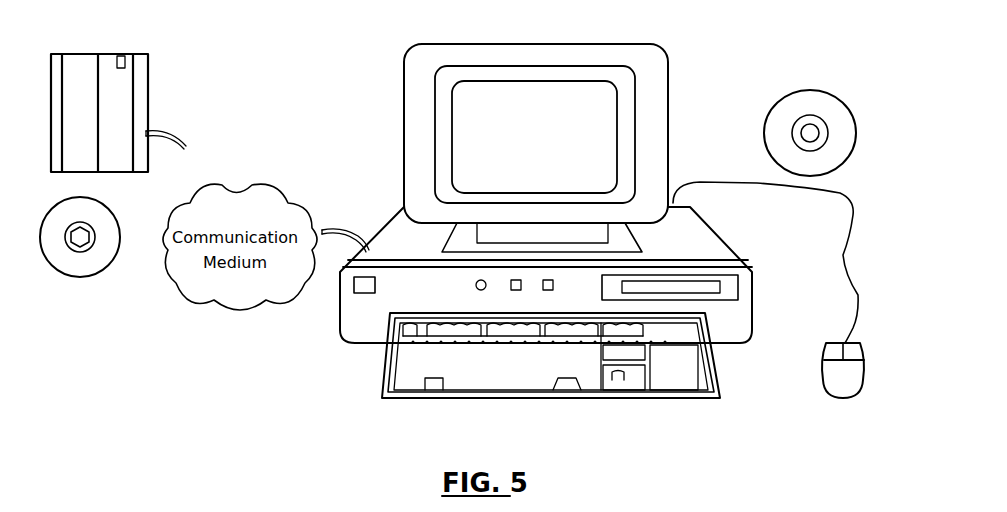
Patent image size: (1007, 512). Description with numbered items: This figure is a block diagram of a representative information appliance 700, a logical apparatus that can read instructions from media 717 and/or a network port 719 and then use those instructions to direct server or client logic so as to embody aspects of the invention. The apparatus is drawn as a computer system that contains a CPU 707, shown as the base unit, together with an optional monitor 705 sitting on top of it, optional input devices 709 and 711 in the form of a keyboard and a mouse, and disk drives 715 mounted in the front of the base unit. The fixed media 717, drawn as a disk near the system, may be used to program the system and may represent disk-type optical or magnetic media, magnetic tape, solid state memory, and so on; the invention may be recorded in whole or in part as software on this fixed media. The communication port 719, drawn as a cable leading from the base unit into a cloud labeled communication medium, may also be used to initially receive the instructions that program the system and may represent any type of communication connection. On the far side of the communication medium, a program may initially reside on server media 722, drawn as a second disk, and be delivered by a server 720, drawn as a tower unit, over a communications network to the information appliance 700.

The information appliance 700 is at (786, 56).
The monitor 705 is at (598, 113).
The CPU 707 is at (712, 237).
The input device 709 is at (455, 399).
The input device 711 is at (848, 380).
The disk drive 715 is at (742, 278).
The fixed media 717 is at (843, 100).
The network port 719 is at (332, 229).
The server 720 is at (125, 54).
The server media 722 is at (110, 208).